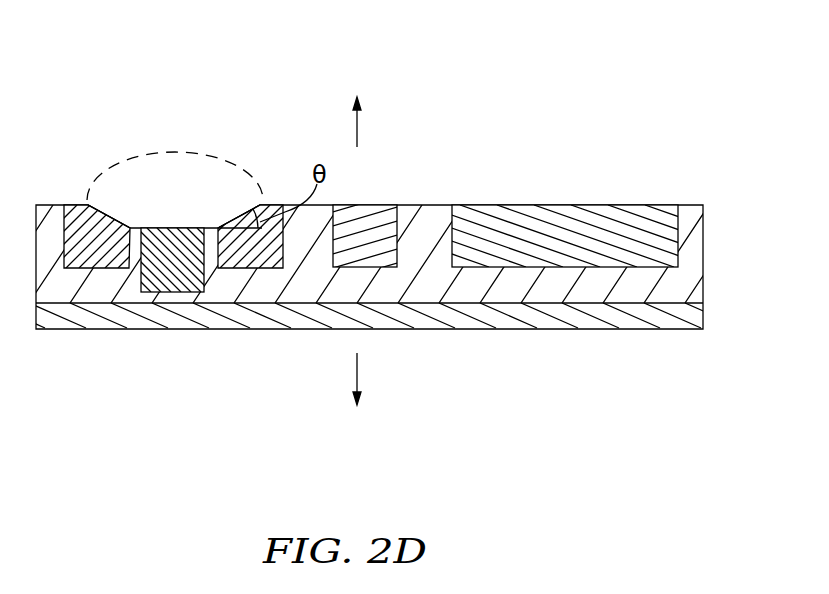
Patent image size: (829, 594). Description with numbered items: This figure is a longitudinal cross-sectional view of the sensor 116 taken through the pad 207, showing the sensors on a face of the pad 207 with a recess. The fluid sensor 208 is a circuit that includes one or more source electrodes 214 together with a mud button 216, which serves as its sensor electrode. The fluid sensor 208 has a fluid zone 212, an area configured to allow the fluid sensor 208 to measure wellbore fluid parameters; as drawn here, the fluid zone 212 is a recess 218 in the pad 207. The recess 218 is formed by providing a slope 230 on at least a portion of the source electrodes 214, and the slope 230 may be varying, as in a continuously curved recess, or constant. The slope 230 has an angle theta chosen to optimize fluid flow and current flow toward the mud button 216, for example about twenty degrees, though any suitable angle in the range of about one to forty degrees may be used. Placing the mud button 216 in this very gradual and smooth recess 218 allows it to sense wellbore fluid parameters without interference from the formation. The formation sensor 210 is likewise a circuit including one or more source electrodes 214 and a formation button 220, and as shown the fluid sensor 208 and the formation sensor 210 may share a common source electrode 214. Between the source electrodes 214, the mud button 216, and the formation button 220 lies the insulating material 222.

The sensor 116 is at (606, 96).
The pad 207 is at (703, 320).
The fluid sensor 208 is at (167, 128).
The formation sensor 210 is at (396, 125).
The fluid zone 212 is at (240, 210).
The source electrodes 214 is at (80, 205).
The mud button 216 is at (180, 228).
The recess 218 is at (137, 191).
The formation button 220 is at (370, 205).
The insulating material 222 is at (703, 260).
The slope 230 is at (228, 165).